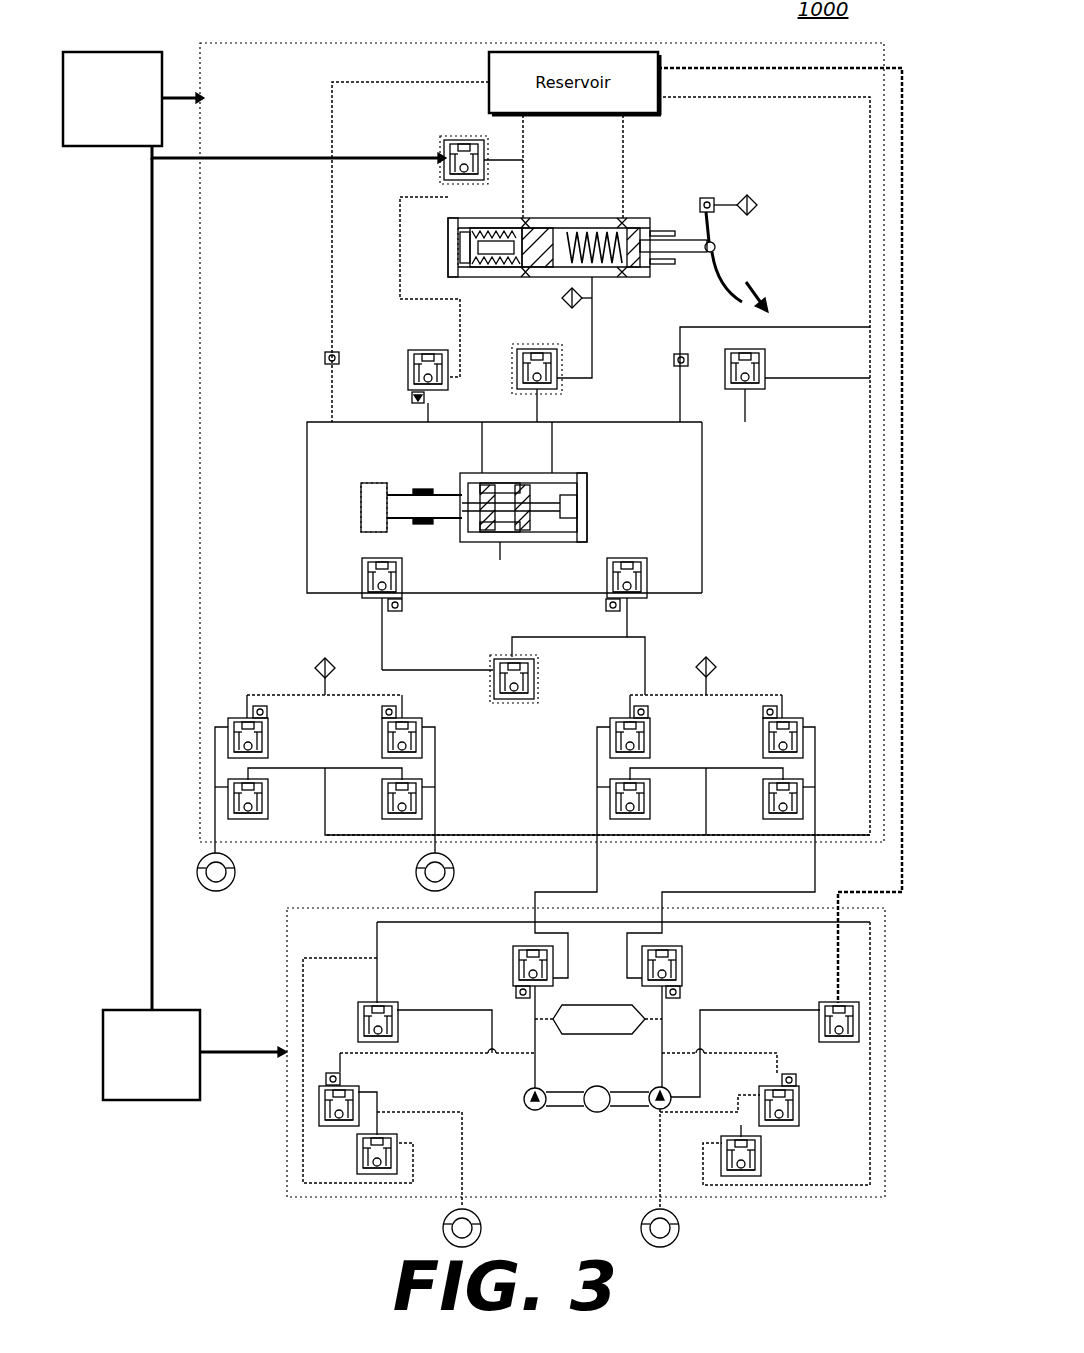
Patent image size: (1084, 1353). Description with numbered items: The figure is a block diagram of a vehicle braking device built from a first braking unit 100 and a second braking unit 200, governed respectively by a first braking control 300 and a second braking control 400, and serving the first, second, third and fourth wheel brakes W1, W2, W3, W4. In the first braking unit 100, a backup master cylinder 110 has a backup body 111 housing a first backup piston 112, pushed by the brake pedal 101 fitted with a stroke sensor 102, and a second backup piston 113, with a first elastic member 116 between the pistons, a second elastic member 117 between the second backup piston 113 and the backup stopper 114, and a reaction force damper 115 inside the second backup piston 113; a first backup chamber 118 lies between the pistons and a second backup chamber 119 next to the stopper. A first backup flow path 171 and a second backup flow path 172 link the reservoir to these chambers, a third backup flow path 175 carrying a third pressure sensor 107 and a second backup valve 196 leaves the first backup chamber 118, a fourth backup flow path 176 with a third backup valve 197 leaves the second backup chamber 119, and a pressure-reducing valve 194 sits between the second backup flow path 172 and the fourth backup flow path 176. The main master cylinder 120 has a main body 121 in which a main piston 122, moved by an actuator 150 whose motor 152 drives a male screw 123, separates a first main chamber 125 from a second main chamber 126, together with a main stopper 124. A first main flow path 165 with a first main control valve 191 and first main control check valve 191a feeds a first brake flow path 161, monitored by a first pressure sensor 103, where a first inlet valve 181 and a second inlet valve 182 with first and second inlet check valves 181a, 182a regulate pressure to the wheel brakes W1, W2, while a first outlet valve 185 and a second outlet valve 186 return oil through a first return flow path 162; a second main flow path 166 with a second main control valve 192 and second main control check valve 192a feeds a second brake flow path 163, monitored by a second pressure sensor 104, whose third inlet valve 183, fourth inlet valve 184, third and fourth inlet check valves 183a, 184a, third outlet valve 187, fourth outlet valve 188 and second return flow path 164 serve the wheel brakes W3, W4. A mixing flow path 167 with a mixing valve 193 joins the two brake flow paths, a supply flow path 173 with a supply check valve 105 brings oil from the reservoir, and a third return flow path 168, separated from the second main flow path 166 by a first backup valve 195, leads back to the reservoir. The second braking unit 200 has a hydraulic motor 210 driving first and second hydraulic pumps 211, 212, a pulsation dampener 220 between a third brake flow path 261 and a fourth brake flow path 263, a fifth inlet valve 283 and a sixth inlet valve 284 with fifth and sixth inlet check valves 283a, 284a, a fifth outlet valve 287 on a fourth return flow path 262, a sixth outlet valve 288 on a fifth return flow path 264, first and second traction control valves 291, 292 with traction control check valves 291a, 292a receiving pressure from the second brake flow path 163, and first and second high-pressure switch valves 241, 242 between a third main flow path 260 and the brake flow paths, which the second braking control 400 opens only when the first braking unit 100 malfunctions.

The first braking unit 100 is at (200, 58).
The second braking unit 200 is at (288, 923).
The first braking control 300 is at (105, 150).
The second braking control 400 is at (108, 1005).
The brake pedal 101 is at (727, 265).
The stroke sensor 102 is at (754, 195).
The first pressure sensor 103 is at (315, 660).
The second pressure sensor 104 is at (715, 660).
The supply check valve 105 is at (324, 357).
The third pressure sensor 107 is at (560, 305).
The backup master cylinder 110 is at (652, 197).
The backup body 111 is at (586, 215).
The first backup piston 112 is at (678, 215).
The second backup piston 113 is at (523, 218).
The backup stopper 114 is at (465, 245).
The reaction force damper 115 is at (538, 268).
The first elastic member 116 is at (613, 277).
The second elastic member 117 is at (470, 277).
The first backup chamber 118 is at (530, 218).
The second backup chamber 119 is at (488, 228).
The main master cylinder 120 is at (603, 487).
The main body 121 is at (488, 468).
The main piston 122 is at (520, 478).
The male screw 123 is at (405, 490).
The main stopper 124 is at (580, 508).
The first main chamber 125 is at (490, 540).
The second main chamber 126 is at (545, 535).
The actuator 150 is at (400, 545).
The motor 152 is at (365, 480).
The first brake flow path 161 is at (220, 718).
The first return flow path 162 is at (280, 778).
The second brake flow path 163 is at (597, 765).
The second return flow path 164 is at (670, 778).
The first main flow path 165 is at (306, 573).
The second main flow path 166 is at (705, 540).
The mixing flow path 167 is at (495, 682).
The third return flow path 168 is at (807, 100).
The first backup flow path 171 is at (624, 140).
The second backup flow path 172 is at (505, 148).
The supply flow path 173 is at (330, 105).
The third backup flow path 175 is at (605, 360).
The fourth backup flow path 176 is at (400, 216).
The first inlet valve 181 is at (250, 718).
The first inlet check valve 181a is at (270, 713).
The second inlet valve 182 is at (410, 718).
The second inlet check valve 182a is at (387, 717).
The third inlet valve 183 is at (615, 721).
The third inlet check valve 183a is at (648, 713).
The fourth inlet valve 184 is at (788, 718).
The fourth inlet check valve 184a is at (763, 717).
The first outlet valve 185 is at (250, 822).
The second outlet valve 186 is at (400, 822).
The third outlet valve 187 is at (630, 822).
The fourth outlet valve 188 is at (780, 822).
The first main control valve 191 is at (360, 594).
The first main control check valve 191a is at (405, 607).
The second main control valve 192 is at (643, 598).
The second main control check valve 192a is at (598, 608).
The mixing valve 193 is at (517, 703).
The pressure-reducing valve 194 is at (445, 148).
The first backup valve 195 is at (768, 368).
The second backup valve 196 is at (563, 390).
The third backup valve 197 is at (407, 372).
The hydraulic motor 210 is at (602, 1085).
The first hydraulic pump 211 is at (540, 1110).
The second hydraulic pump 212 is at (658, 1110).
The pulsation dampener 220 is at (592, 1004).
The first high-pressure switch valve 241 is at (383, 1001).
The second high-pressure switch valve 242 is at (825, 1000).
The third main flow path 260 is at (902, 66).
The third brake flow path 261 is at (465, 1166).
The fourth return flow path 262 is at (303, 1167).
The fourth brake flow path 263 is at (644, 1153).
The fifth return flow path 264 is at (865, 1180).
The fifth inlet valve 283 is at (358, 1092).
The fifth inlet check valve 283a is at (327, 1072).
The sixth inlet valve 284 is at (798, 1102).
The sixth inlet check valve 284a is at (785, 1072).
The fifth outlet valve 287 is at (377, 1175).
The sixth outlet valve 288 is at (741, 1175).
The first traction control valve 291 is at (513, 963).
The first traction control check valve 291a is at (515, 993).
The second traction control valve 292 is at (682, 962).
The second traction check valve 292a is at (682, 993).
The first wheel brake W1 is at (198, 872).
The second wheel brake W2 is at (451, 872).
The third wheel brake W3 is at (479, 1228).
The fourth wheel brake W4 is at (643, 1228).